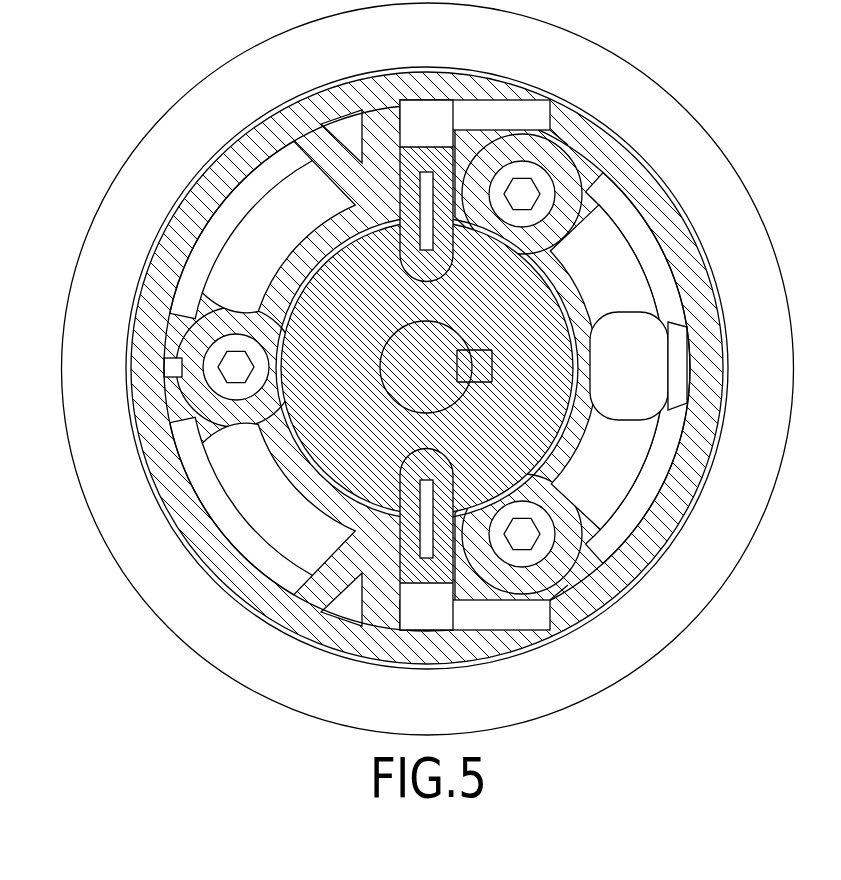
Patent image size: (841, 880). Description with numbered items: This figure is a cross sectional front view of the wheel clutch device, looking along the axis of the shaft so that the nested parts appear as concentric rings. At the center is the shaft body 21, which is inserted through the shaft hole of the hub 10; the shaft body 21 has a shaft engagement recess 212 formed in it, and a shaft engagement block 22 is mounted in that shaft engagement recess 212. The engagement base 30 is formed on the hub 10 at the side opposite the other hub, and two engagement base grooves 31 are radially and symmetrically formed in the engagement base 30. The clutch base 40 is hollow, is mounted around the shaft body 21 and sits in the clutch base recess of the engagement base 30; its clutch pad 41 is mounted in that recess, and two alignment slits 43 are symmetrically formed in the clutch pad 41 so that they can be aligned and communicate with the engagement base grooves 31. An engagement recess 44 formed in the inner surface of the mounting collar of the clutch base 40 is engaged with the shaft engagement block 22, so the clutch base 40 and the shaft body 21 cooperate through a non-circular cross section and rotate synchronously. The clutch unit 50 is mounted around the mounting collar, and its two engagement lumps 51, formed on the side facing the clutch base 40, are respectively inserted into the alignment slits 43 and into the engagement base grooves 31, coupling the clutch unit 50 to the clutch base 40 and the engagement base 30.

The hub 10 is at (737, 211).
The shaft body 21 is at (404, 393).
The shaft engagement block 22 is at (478, 366).
The shaft engagement recess 212 is at (469, 350).
The engagement base 30 is at (500, 598).
The engagement base groove 31 is at (408, 190).
The clutch base 40 is at (318, 288).
The clutch pad 41 is at (330, 458).
The alignment slit 43 is at (413, 258).
The engagement recess 44 is at (475, 375).
The clutch unit 50 is at (434, 138).
The engagement lump 51 is at (417, 157).